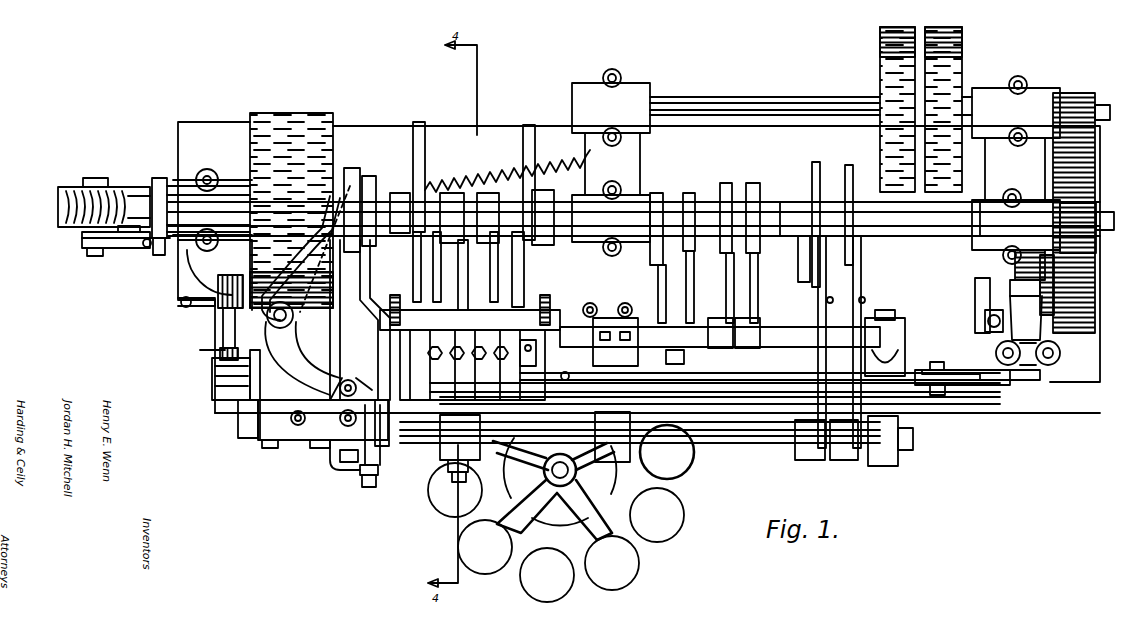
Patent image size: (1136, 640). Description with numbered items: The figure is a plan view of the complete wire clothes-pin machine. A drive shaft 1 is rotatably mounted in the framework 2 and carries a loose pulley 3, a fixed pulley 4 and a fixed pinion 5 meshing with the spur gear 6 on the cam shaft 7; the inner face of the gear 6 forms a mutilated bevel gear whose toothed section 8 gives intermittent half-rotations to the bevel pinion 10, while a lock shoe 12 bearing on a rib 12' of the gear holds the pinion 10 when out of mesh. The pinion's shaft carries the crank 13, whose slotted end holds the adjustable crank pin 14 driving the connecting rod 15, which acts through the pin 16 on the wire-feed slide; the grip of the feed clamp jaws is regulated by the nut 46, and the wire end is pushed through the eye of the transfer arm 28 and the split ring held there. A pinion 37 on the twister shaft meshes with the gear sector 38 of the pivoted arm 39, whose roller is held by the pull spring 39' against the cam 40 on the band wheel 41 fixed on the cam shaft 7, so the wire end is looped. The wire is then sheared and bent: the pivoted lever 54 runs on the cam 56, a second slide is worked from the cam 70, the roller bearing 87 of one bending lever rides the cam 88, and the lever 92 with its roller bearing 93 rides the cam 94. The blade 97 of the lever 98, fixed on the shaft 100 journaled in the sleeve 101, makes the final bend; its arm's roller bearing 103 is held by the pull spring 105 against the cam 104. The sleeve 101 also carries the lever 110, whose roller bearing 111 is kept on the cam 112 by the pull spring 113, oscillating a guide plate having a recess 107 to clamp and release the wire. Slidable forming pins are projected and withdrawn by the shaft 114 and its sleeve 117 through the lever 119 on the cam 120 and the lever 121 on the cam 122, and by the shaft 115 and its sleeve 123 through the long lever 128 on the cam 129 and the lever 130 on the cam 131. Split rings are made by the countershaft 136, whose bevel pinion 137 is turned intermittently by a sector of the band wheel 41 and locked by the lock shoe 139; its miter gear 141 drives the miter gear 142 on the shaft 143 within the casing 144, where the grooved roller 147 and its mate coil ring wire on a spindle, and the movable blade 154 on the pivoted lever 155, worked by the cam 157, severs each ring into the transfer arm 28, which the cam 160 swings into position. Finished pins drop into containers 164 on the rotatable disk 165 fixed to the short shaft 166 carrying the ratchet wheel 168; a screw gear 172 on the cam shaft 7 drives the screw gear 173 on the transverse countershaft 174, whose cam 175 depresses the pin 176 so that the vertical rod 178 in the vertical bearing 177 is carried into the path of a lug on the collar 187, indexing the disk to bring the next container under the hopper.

The drive shaft 1 is at (780, 97).
The framework 2 is at (636, 78).
The pulley 3 is at (897, 27).
The pulley 4 is at (945, 27).
The pinion 5 is at (1078, 93).
The spur gear 6 is at (1052, 158).
The cam shaft 7 is at (950, 238).
The section of mutilated bevel gear 8 is at (1055, 345).
The bevel pinion 10 is at (1000, 340).
The lock shoe 12 is at (1014, 310).
The rib 12' is at (1032, 226).
The crank 13 is at (995, 385).
The crank pin 14 is at (938, 370).
The connecting rod 15 is at (798, 383).
The pin 16 is at (628, 372).
The transfer arm 28 is at (390, 440).
The pinion 37 is at (348, 378).
The gear sector 38 is at (330, 462).
The pivoted arm 39 is at (302, 348).
The pull spring 39' is at (507, 171).
The cam 40 is at (312, 238).
The band wheel 41 is at (290, 113).
The nut 46 is at (556, 374).
The pivoted lever 54 is at (520, 263).
The cam 56 is at (529, 125).
The cam 70 is at (419, 122).
The roller bearing 87 is at (508, 198).
The cam 88 is at (480, 262).
The lever 92 is at (440, 290).
The roller bearing 93 is at (470, 190).
The cam 94 is at (428, 268).
The blade 97 is at (470, 465).
The lever 98 is at (448, 458).
The shaft 100 is at (913, 445).
The sleeve 101 is at (770, 444).
The roller bearing 103 is at (875, 204).
The cam 104 is at (855, 156).
The pull spring 105 is at (866, 298).
The recess 107 is at (862, 262).
The lever 110 is at (822, 332).
The roller bearing 111 is at (800, 280).
The cam 112 is at (816, 162).
The pull spring 113 is at (832, 296).
The shaft 114 is at (905, 328).
The shaft 115 is at (700, 360).
The sleeve 117 is at (718, 318).
The lever 119 is at (760, 278).
The cam 120 is at (752, 183).
The lever 121 is at (734, 278).
The cam 122 is at (728, 183).
The sleeve 123 is at (553, 312).
The long lever 128 is at (686, 285).
The cam 129 is at (688, 193).
The lever 130 is at (658, 285).
The cam 131 is at (655, 193).
The countershaft 136 is at (220, 336).
The bevel pinion 137 is at (216, 288).
The lock shoe 139 is at (222, 312).
The miter gear 141 is at (210, 398).
The miter gear 142 is at (236, 425).
The shaft 143 is at (262, 440).
The casing 144 is at (320, 448).
The roller 147 is at (392, 358).
The movable blade 154 is at (360, 470).
The pivoted lever 155 is at (342, 296).
The cam 157 is at (350, 168).
The cam 160 is at (372, 176).
The containers 164 is at (684, 520).
The rotatable disk 165 is at (700, 480).
The short shaft 166 is at (544, 476).
The ratchet wheel 168 is at (612, 482).
The screw gear 172 is at (150, 180).
The screw gear 173 is at (60, 207).
The transverse countershaft 174 is at (93, 176).
The cam 175 is at (115, 250).
The pin 176 is at (148, 247).
The vertical bearing 177 is at (137, 236).
The vertical rod 178 is at (160, 255).
The collar 187 is at (160, 168).